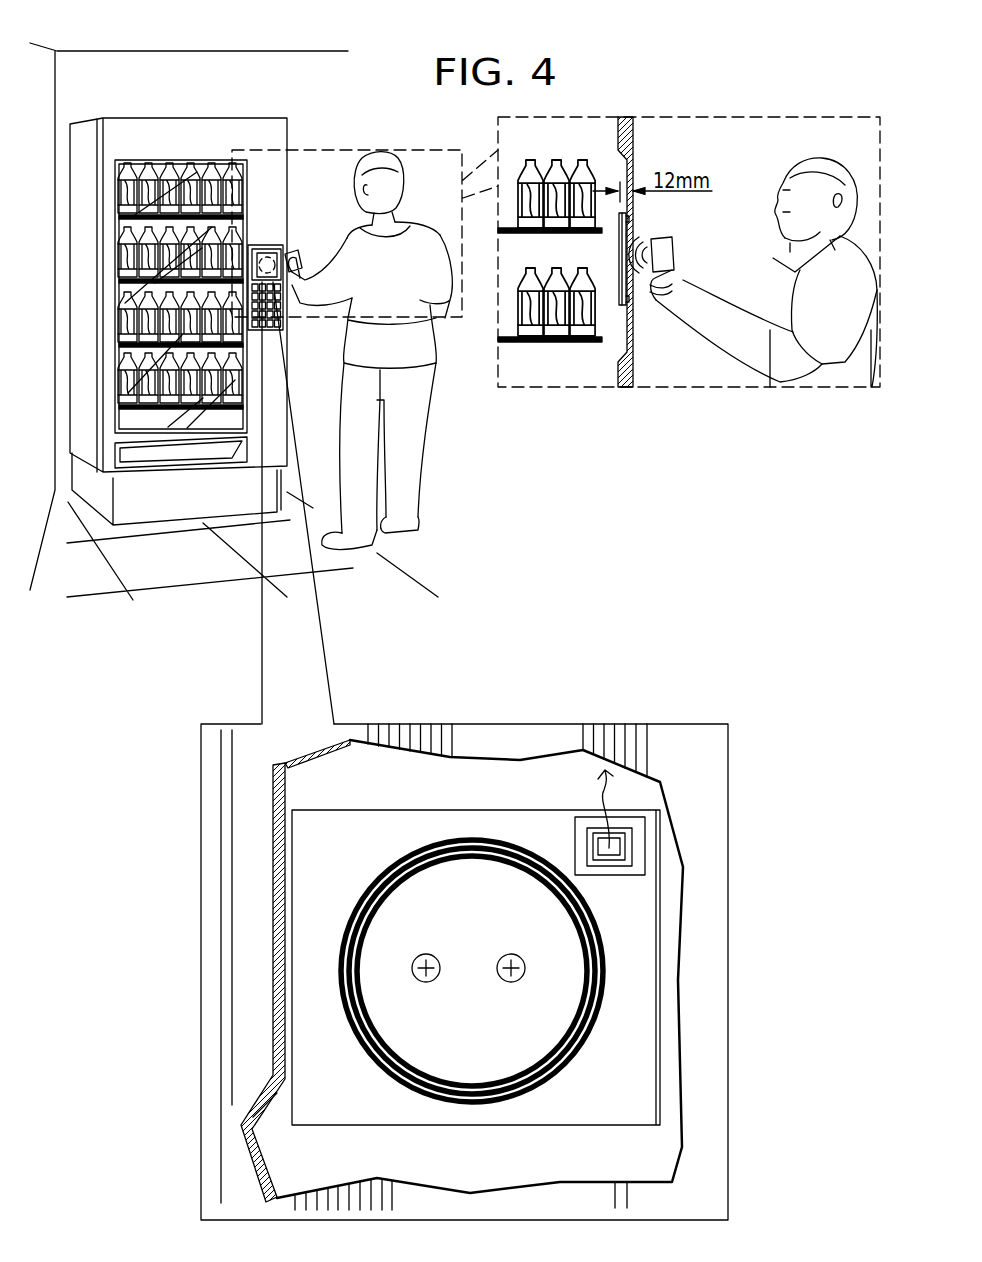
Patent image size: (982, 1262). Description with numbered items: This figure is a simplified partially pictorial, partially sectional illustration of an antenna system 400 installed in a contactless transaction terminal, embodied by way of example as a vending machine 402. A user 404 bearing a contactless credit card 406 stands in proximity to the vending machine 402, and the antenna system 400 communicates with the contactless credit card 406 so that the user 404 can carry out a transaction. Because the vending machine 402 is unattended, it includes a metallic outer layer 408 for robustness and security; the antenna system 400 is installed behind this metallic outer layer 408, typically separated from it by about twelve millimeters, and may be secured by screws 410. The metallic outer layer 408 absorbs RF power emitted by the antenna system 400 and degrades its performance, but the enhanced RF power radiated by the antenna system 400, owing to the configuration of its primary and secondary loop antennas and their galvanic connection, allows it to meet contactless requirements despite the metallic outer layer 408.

The antenna system 400 is at (637, 913).
The vending machine 402 is at (141, 118).
The user 404 is at (366, 157).
The contactless credit card 406 is at (673, 251).
The metallic outer layer 408 is at (632, 368).
The screws 410 is at (490, 1001).